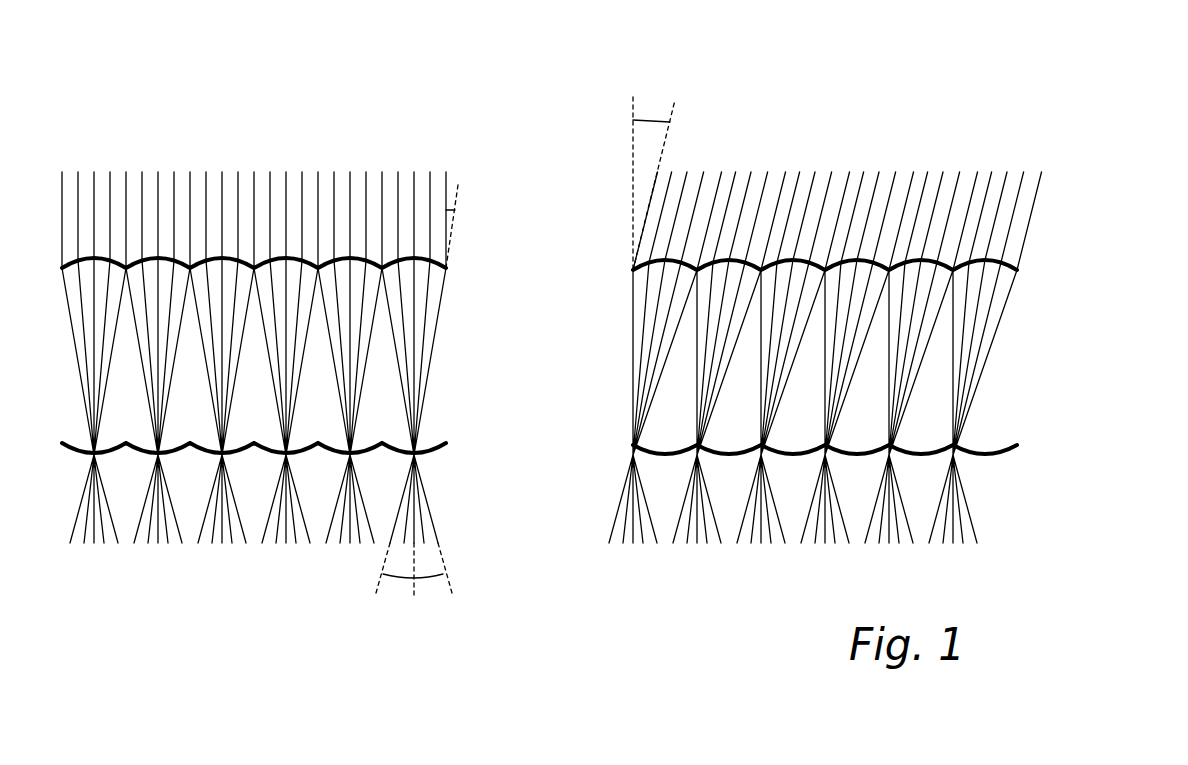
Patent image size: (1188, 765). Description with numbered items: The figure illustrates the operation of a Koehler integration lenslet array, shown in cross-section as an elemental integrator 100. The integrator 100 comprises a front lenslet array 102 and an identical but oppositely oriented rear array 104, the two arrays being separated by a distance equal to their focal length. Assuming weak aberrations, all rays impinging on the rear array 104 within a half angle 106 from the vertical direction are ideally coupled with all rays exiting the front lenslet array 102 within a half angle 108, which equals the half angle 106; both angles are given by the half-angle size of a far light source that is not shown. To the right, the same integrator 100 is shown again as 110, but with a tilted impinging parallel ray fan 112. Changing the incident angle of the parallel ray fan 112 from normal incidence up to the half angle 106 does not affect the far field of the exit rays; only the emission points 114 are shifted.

The elemental integrator 100 is at (381, 347).
The front lenslet array 102 is at (435, 458).
The rear array 104 is at (450, 268).
The half angle 106 is at (450, 200).
The half angle 108 is at (418, 597).
The integrator with tilted impinging parallel ray fan 110 is at (873, 308).
The parallel ray fan 112 is at (852, 157).
The emission points 114 is at (990, 458).